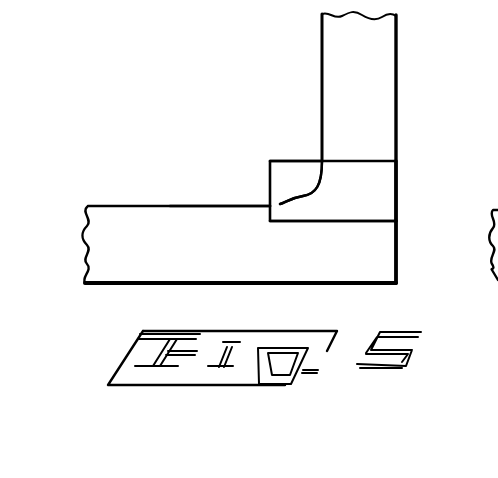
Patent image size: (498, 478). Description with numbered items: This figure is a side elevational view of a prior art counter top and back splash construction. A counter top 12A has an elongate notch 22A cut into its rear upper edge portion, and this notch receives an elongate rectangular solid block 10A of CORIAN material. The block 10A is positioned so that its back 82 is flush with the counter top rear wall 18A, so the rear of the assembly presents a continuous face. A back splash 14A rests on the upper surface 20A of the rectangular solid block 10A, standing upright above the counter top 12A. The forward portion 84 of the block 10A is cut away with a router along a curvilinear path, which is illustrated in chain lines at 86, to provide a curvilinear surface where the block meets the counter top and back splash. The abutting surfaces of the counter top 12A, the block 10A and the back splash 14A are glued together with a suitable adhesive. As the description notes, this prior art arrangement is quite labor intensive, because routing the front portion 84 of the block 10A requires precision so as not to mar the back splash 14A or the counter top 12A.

The rectangular solid block 10A is at (240, 122).
The counter top 12A is at (60, 216).
The back splash 14A is at (372, 48).
The counter top rear wall 18A is at (397, 258).
The upper surface 20A is at (170, 205).
The elongate notch 22A is at (319, 215).
The back of the block 82 is at (397, 190).
The forward portion of the block 84 is at (279, 167).
The curvilinear path 86 is at (310, 193).